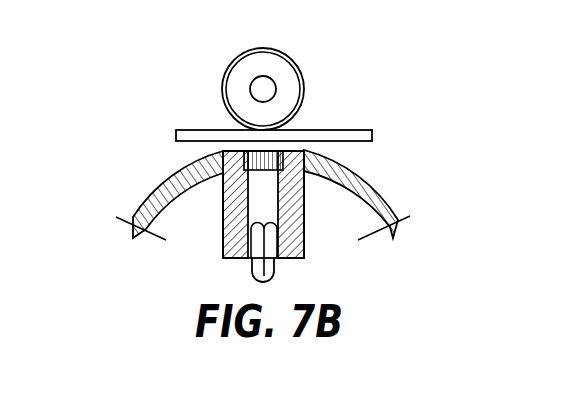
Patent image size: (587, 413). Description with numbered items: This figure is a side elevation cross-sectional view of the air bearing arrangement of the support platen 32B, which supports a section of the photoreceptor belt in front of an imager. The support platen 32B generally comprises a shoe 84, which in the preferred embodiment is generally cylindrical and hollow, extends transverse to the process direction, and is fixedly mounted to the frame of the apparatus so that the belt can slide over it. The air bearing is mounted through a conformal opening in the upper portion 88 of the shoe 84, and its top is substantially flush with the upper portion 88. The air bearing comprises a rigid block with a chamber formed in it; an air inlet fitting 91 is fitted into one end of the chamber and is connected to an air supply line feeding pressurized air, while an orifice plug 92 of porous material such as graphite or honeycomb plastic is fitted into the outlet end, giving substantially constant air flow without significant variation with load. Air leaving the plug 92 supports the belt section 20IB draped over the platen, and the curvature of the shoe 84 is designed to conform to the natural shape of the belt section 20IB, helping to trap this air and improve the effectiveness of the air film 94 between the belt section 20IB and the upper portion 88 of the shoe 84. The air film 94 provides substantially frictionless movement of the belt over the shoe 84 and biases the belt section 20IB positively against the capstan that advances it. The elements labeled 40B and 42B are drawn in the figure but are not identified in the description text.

The roller 40B is at (303, 83).
The axle 42B is at (265, 87).
The belt section 20IB is at (348, 130).
The air film 94 is at (228, 145).
The support platen 32B is at (373, 182).
The shoe 84 is at (140, 196).
The upper portion of the shoe 88 is at (397, 211).
The orifice plug 92 is at (274, 160).
The air inlet fitting 91 is at (263, 265).